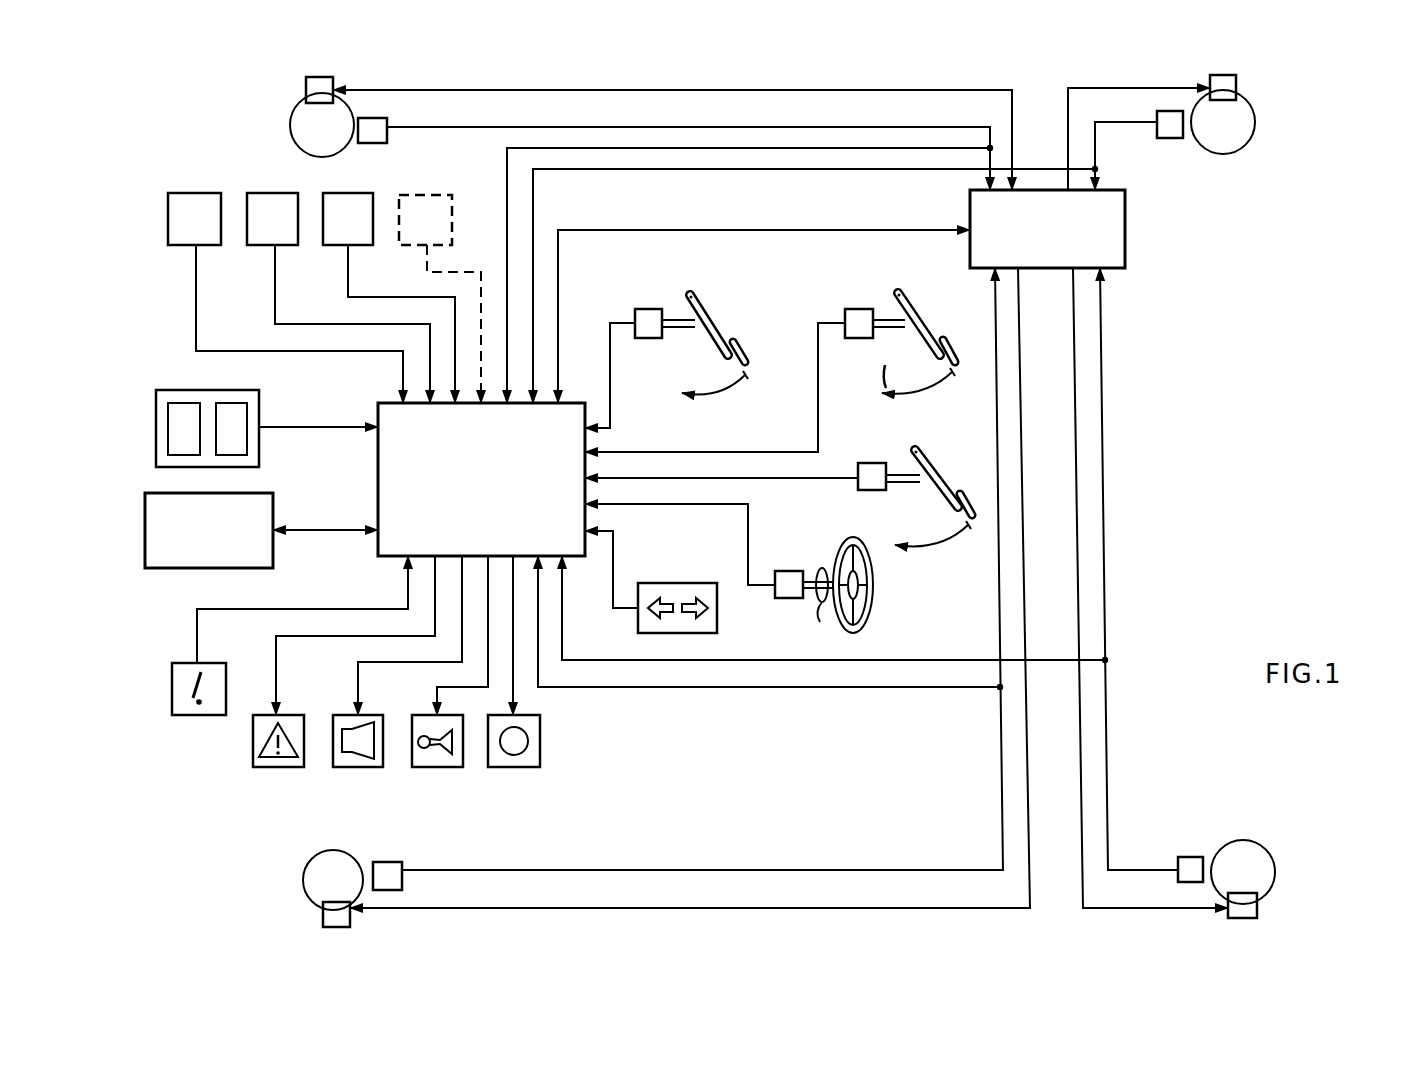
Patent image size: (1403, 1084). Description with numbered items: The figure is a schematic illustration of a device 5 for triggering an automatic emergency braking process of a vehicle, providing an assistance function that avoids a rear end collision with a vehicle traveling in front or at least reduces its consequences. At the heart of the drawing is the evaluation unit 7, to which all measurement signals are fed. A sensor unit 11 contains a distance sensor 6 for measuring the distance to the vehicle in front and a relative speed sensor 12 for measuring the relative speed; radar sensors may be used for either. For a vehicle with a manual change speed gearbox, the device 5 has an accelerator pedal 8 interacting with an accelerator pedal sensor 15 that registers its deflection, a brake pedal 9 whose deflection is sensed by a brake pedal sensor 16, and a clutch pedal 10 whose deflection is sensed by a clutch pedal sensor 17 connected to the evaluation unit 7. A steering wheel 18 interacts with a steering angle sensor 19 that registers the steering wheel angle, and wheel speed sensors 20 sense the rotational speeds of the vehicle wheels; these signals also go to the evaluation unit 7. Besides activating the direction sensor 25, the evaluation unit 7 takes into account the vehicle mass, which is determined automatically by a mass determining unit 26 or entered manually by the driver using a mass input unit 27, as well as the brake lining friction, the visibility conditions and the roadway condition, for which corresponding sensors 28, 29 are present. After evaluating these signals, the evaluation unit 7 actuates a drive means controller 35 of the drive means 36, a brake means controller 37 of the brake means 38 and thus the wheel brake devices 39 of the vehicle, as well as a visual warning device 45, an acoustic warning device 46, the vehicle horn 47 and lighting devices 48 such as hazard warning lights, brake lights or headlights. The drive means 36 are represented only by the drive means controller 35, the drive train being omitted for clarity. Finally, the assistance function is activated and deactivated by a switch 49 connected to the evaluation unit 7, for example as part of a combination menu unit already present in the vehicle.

The device 5 is at (1152, 575).
The distance sensor 6 is at (178, 410).
The evaluation unit 7 is at (497, 498).
The accelerator pedal 8 is at (918, 322).
The brake pedal 9 is at (935, 474).
The clutch pedal 10 is at (712, 320).
The sensor unit 11 is at (262, 448).
The relative speed sensor 12 is at (248, 412).
The accelerator pedal sensor 15 is at (856, 309).
The brake pedal sensor 16 is at (870, 463).
The clutch pedal sensor 17 is at (645, 309).
The steering wheel 18 is at (874, 605).
The steering angle sensor 19 is at (782, 598).
The wheel speed sensors 20 is at (392, 118).
The direction sensor 25 is at (672, 583).
The mass determining unit 26 is at (332, 247).
The mass input unit 27 is at (432, 195).
The sensor 28 is at (190, 193).
The sensor 29 is at (272, 193).
The drive means controller 35 is at (194, 547).
The drive means 36 is at (280, 502).
The brake means controller 37 is at (1030, 244).
The brake means 38 is at (283, 115).
The wheel brake devices 39 is at (303, 91).
The visual warning device 45 is at (252, 767).
The acoustic warning device 46 is at (345, 768).
The vehicle horn 47 is at (432, 768).
The lighting devices 48 is at (512, 768).
The switch 49 is at (172, 715).